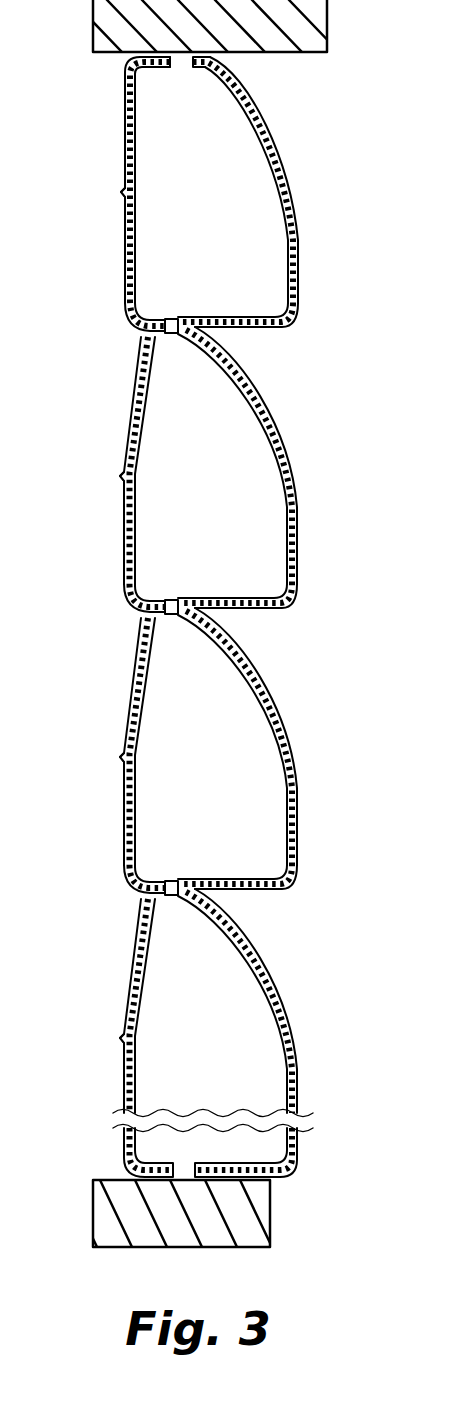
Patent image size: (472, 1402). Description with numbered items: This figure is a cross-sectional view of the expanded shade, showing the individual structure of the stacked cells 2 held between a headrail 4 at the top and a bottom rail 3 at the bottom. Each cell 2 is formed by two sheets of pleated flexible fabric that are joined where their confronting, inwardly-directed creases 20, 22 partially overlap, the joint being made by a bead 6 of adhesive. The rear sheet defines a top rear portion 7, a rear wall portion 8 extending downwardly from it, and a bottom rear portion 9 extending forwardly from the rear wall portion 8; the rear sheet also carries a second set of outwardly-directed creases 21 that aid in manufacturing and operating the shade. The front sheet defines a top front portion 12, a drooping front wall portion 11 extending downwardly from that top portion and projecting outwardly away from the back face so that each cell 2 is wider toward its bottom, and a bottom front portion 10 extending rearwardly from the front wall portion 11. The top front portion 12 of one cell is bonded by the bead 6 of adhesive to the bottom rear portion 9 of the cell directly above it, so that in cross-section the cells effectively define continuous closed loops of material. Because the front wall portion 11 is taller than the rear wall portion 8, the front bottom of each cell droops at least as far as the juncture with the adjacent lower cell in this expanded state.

The cell 2 is at (120, 348).
The bottom rail 3 is at (265, 1197).
The headrail 4 is at (313, 15).
The bead of adhesive 6 is at (183, 334).
The top rear portion 7 is at (162, 334).
The rear wall portion 8 is at (124, 123).
The bottom rear portion 9 is at (143, 325).
The bottom front portion 10 is at (222, 316).
The front wall portion 11 is at (283, 155).
The top front portion 12 is at (194, 68).
The inwardly-directed crease 20 is at (165, 337).
The outwardly-directed crease 21 is at (122, 195).
The inwardly-directed crease 22 is at (181, 318).